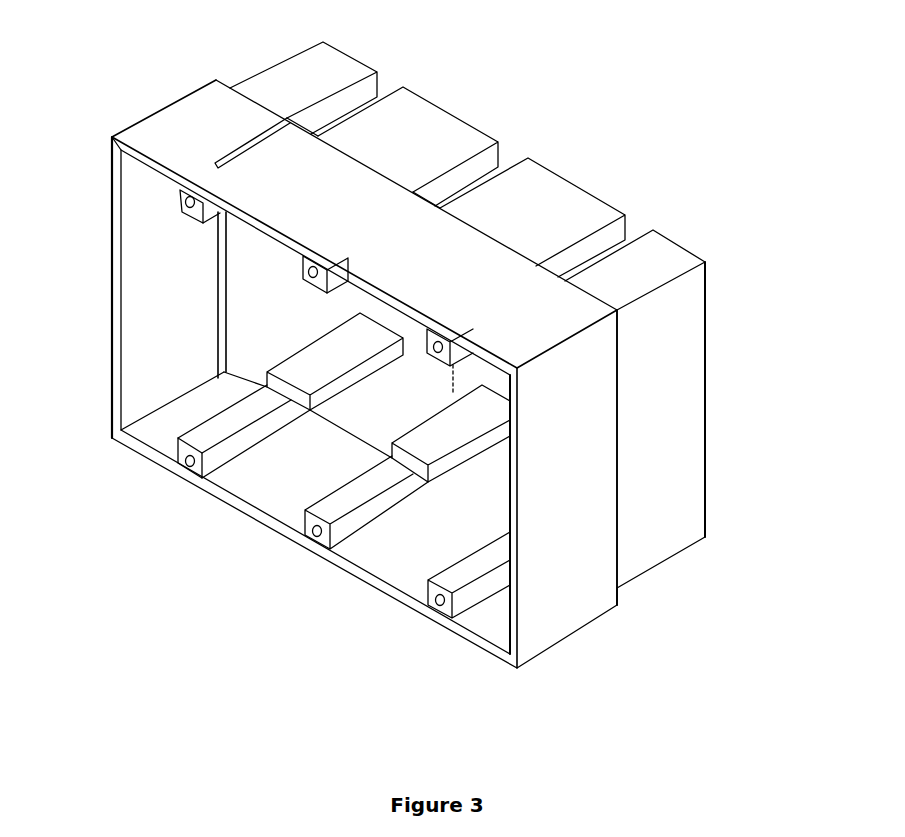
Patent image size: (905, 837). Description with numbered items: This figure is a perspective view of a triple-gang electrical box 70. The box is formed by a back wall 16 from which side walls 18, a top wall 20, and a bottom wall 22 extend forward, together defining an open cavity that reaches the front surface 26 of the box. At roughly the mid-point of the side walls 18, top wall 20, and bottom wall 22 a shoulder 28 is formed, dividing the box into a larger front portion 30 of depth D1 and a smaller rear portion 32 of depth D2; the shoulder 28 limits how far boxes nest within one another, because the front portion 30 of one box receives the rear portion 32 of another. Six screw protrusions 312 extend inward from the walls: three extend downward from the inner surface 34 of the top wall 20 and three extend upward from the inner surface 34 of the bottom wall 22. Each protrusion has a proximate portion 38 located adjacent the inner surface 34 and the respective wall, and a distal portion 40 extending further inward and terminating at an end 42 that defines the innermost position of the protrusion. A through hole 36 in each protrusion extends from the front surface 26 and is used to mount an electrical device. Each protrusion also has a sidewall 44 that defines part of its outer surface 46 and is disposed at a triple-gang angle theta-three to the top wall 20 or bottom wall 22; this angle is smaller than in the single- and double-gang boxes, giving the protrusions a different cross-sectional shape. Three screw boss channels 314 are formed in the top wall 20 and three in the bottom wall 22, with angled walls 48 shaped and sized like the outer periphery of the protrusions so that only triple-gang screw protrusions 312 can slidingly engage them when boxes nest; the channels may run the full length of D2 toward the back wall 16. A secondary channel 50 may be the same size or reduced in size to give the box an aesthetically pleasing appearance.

The triple-gang electrical box 70 is at (118, 88).
The top wall 20 is at (207, 105).
The bottom wall 22 is at (307, 553).
The front surface 26 is at (110, 330).
The inner surface 34 is at (137, 378).
The side walls 18 is at (108, 278).
The shoulder 28 is at (213, 277).
The front portion 30 is at (547, 622).
The rear portion 32 is at (697, 367).
The back wall 16 is at (710, 445).
The end 42 is at (228, 432).
The distal portion 40 is at (180, 207).
The proximate portion 38 is at (183, 190).
The screw protrusions 312 is at (197, 226).
The sidewall 44 is at (327, 268).
The through hole 36 is at (308, 273).
The outer surface 46 is at (340, 280).
The angled walls 48 is at (373, 87).
The screw boss channels 314 is at (348, 107).
The secondary channel 50 is at (253, 148).
The depth of front portion D1 is at (612, 362).
The depth of rear portion D2 is at (700, 292).